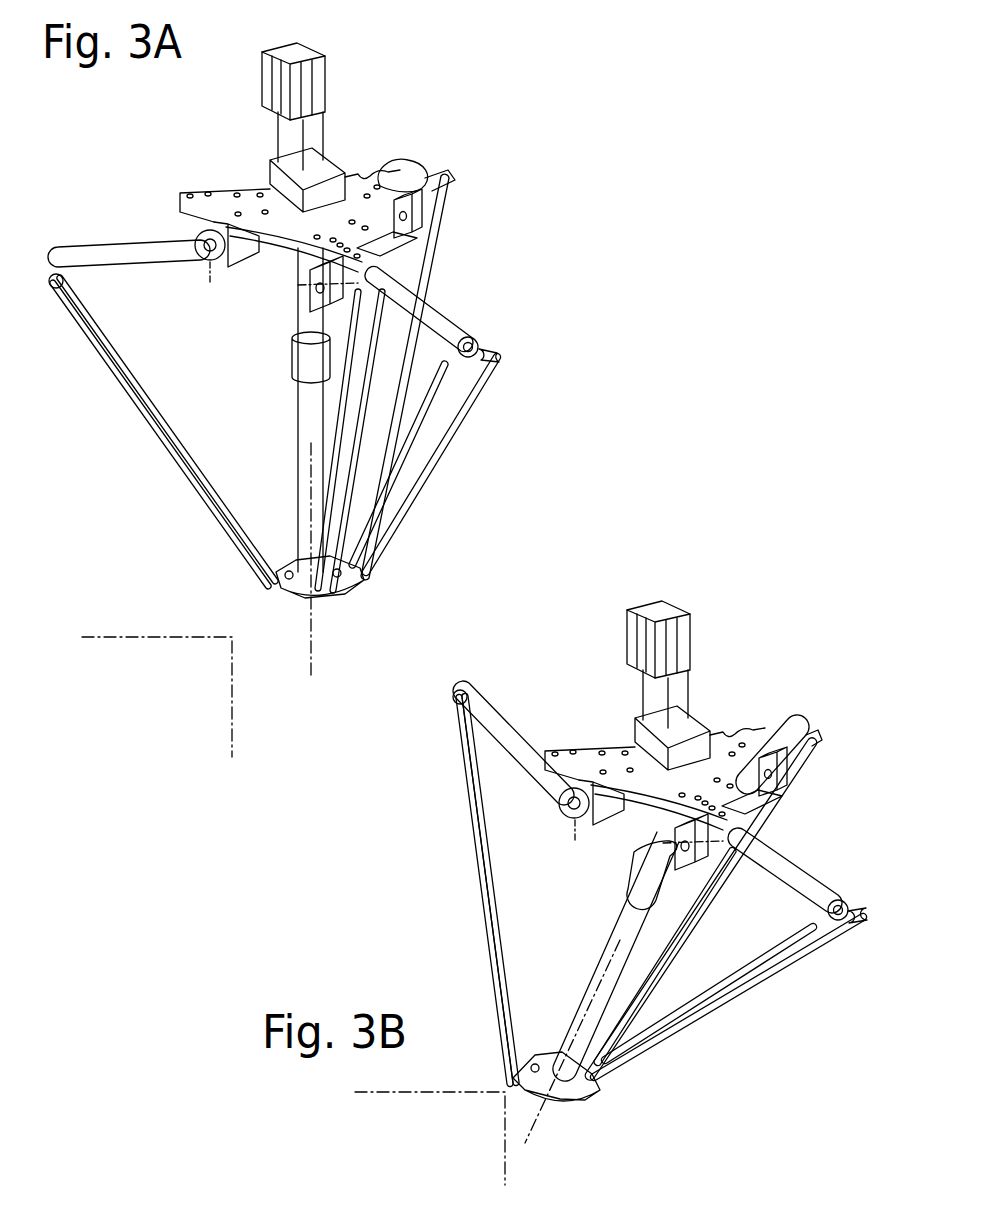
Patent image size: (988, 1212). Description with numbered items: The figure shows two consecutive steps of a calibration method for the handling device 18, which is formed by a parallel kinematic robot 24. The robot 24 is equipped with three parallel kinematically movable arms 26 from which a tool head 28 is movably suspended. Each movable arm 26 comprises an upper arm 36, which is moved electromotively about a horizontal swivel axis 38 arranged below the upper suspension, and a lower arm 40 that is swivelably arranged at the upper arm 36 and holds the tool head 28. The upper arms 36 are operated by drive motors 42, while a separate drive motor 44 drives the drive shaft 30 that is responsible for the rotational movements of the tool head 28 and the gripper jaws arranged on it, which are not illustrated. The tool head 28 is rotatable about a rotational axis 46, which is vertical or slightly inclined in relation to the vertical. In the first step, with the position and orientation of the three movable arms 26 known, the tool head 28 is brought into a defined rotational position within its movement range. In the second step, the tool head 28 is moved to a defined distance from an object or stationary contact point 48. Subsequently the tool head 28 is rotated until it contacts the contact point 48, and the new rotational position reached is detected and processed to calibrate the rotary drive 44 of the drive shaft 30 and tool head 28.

In FIG. 3A, the handling device 18 is at (600, 153).
In FIG. 3B, the handling device 18 is at (337, 880).
In FIG. 3A, the parallel kinematic robot 24 is at (303, 368).
In FIG. 3B, the parallel kinematic robot 24 is at (648, 877).
In FIG. 3A, the movable arms 26 is at (455, 266).
In FIG. 3B, the movable arms 26 is at (470, 920).
In FIG. 3A, the tool head 28 is at (330, 603).
In FIG. 3B, the tool head 28 is at (540, 1057).
In FIG. 3A, the drive shaft 30 is at (307, 415).
In FIG. 3B, the drive shaft 30 is at (607, 958).
In FIG. 3A, the upper arms 36 is at (112, 238).
In FIG. 3B, the upper arms 36 is at (490, 707).
In FIG. 3A, the horizontal swivel axes 38 is at (425, 215).
In FIG. 3B, the horizontal swivel axes 38 is at (785, 782).
In FIG. 3A, the lower arms 40 is at (152, 397).
In FIG. 3B, the lower arms 40 is at (478, 863).
In FIG. 3A, the drive motors 42 is at (448, 186).
In FIG. 3B, the drive motors 42 is at (812, 762).
In FIG. 3A, the drive motor 44 is at (290, 132).
In FIG. 3B, the drive motor 44 is at (662, 680).
In FIG. 3A, the rotational axis 46 is at (313, 670).
In FIG. 3B, the rotational axis 46 is at (530, 1130).
In FIG. 3A, the stationary contact point 48 is at (192, 696).
In FIG. 3B, the stationary contact point 48 is at (467, 1151).